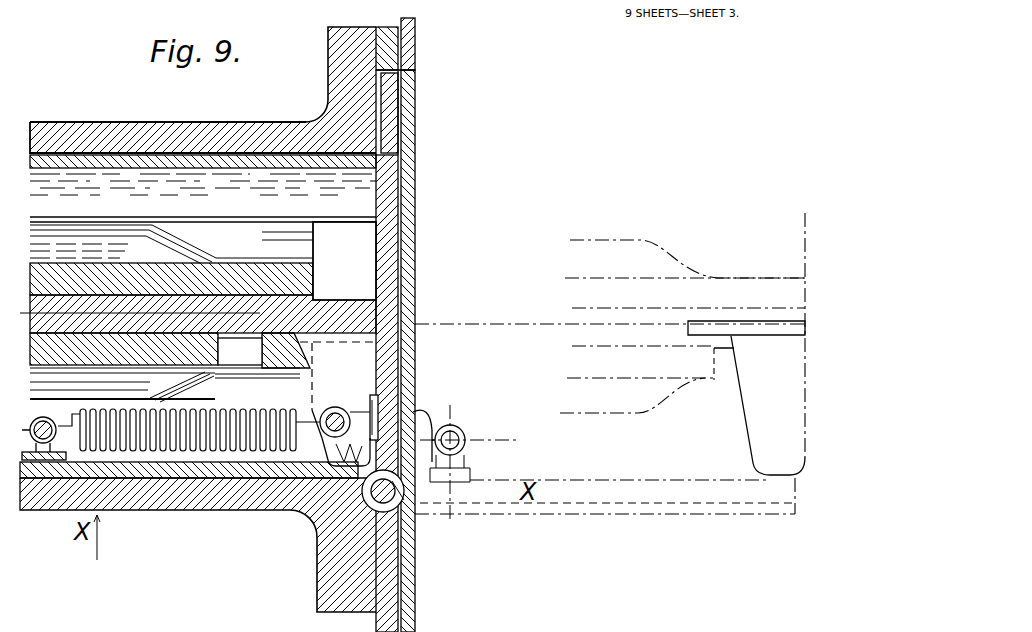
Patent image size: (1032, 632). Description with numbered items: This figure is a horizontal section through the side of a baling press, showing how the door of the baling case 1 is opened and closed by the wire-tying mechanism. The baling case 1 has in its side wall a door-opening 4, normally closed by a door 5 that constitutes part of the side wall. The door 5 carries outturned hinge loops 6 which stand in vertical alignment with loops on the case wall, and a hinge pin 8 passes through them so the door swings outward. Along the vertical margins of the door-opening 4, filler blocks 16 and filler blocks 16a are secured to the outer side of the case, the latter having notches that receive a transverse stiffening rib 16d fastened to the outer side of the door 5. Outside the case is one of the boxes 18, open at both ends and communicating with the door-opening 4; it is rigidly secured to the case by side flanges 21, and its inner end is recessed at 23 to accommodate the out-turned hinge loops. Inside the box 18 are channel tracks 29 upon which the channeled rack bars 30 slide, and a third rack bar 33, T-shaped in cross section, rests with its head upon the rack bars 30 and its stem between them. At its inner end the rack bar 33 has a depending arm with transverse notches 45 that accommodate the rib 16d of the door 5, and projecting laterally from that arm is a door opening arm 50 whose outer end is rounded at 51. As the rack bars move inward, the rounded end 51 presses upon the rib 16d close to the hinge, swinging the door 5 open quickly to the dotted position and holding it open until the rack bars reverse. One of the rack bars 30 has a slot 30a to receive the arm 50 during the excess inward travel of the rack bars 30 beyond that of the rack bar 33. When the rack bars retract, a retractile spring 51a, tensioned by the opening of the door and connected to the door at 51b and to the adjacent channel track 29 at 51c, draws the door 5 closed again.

The baling case 1 is at (417, 36).
The door-openings 4 is at (416, 70).
The doors 5 is at (416, 223).
The hinge loops 6 is at (395, 506).
The hinge pin 8 is at (404, 500).
The filler blocks 16 is at (380, 605).
The filler blocks 16a is at (381, 33).
The transverse stiffening ribs 16d is at (390, 108).
The boxes 18 is at (68, 132).
The side flanges 21 is at (326, 46).
The recesses 23 is at (317, 531).
The channel tracks 29 is at (143, 470).
The channeled rack bars 30 is at (182, 278).
The slot 30a is at (288, 352).
The third rack bar 33 is at (330, 306).
The transverse notches 45 is at (376, 310).
The door opening arm 50 is at (338, 405).
The rounded end 51 is at (412, 432).
The retractile springs 51a is at (240, 353).
The spring connection to door 51b is at (346, 412).
The spring connection to channel track 51c is at (47, 446).